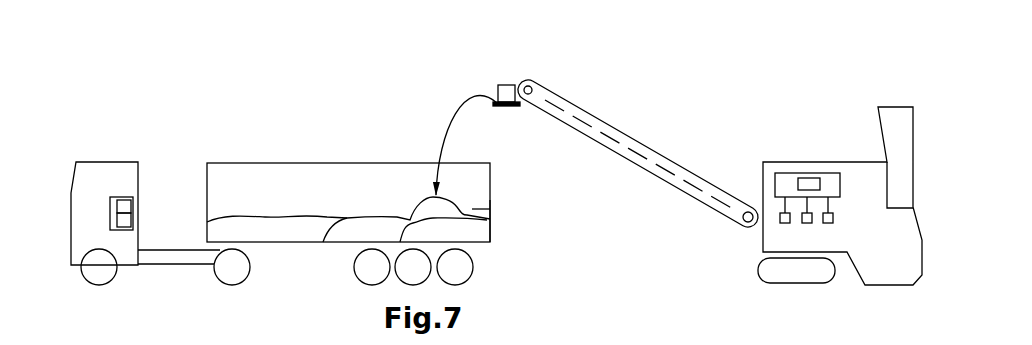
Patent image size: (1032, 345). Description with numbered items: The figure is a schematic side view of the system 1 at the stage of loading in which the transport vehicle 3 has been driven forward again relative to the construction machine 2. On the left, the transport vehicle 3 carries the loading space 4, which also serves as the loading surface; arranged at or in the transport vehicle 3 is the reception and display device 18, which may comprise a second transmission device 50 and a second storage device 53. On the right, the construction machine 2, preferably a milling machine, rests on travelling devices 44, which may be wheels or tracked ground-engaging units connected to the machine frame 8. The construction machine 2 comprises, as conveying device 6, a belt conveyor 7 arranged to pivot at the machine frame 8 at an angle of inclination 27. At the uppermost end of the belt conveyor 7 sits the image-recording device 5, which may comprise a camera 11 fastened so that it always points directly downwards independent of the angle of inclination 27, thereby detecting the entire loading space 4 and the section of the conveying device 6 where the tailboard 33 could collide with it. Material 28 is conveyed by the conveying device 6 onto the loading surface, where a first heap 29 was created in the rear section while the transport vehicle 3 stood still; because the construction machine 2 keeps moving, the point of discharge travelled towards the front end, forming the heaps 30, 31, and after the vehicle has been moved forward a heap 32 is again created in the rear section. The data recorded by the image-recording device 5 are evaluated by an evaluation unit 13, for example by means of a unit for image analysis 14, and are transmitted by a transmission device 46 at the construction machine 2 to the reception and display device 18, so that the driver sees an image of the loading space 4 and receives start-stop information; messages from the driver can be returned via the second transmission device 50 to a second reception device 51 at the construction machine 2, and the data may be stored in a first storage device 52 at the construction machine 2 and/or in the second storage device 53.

The system 1 is at (491, 37).
The construction machine 2 is at (862, 180).
The transport vehicle 3 is at (191, 146).
The loading space 4 is at (264, 197).
The image-recording device 5 is at (525, 85).
The conveying device 6 is at (588, 107).
The belt conveyor 7 is at (662, 167).
The machine frame 8 is at (892, 253).
The camera 11 is at (505, 85).
The evaluation unit 13 is at (808, 172).
The unit for image analysis 14 is at (812, 183).
The reception and display device 18 is at (110, 205).
The angle of inclination 27 is at (760, 183).
The material 28 is at (453, 127).
The first heap 29 is at (442, 228).
The heap 30 is at (358, 228).
The heap 31 is at (263, 227).
The heap 32 is at (490, 209).
The tailboard 33 is at (490, 225).
The travelling devices 44 is at (840, 332).
The transmission device 46 is at (782, 226).
The second transmission device 50 is at (126, 200).
The second reception device 51 is at (806, 226).
The first storage device 52 is at (828, 226).
The second storage device 53 is at (118, 218).